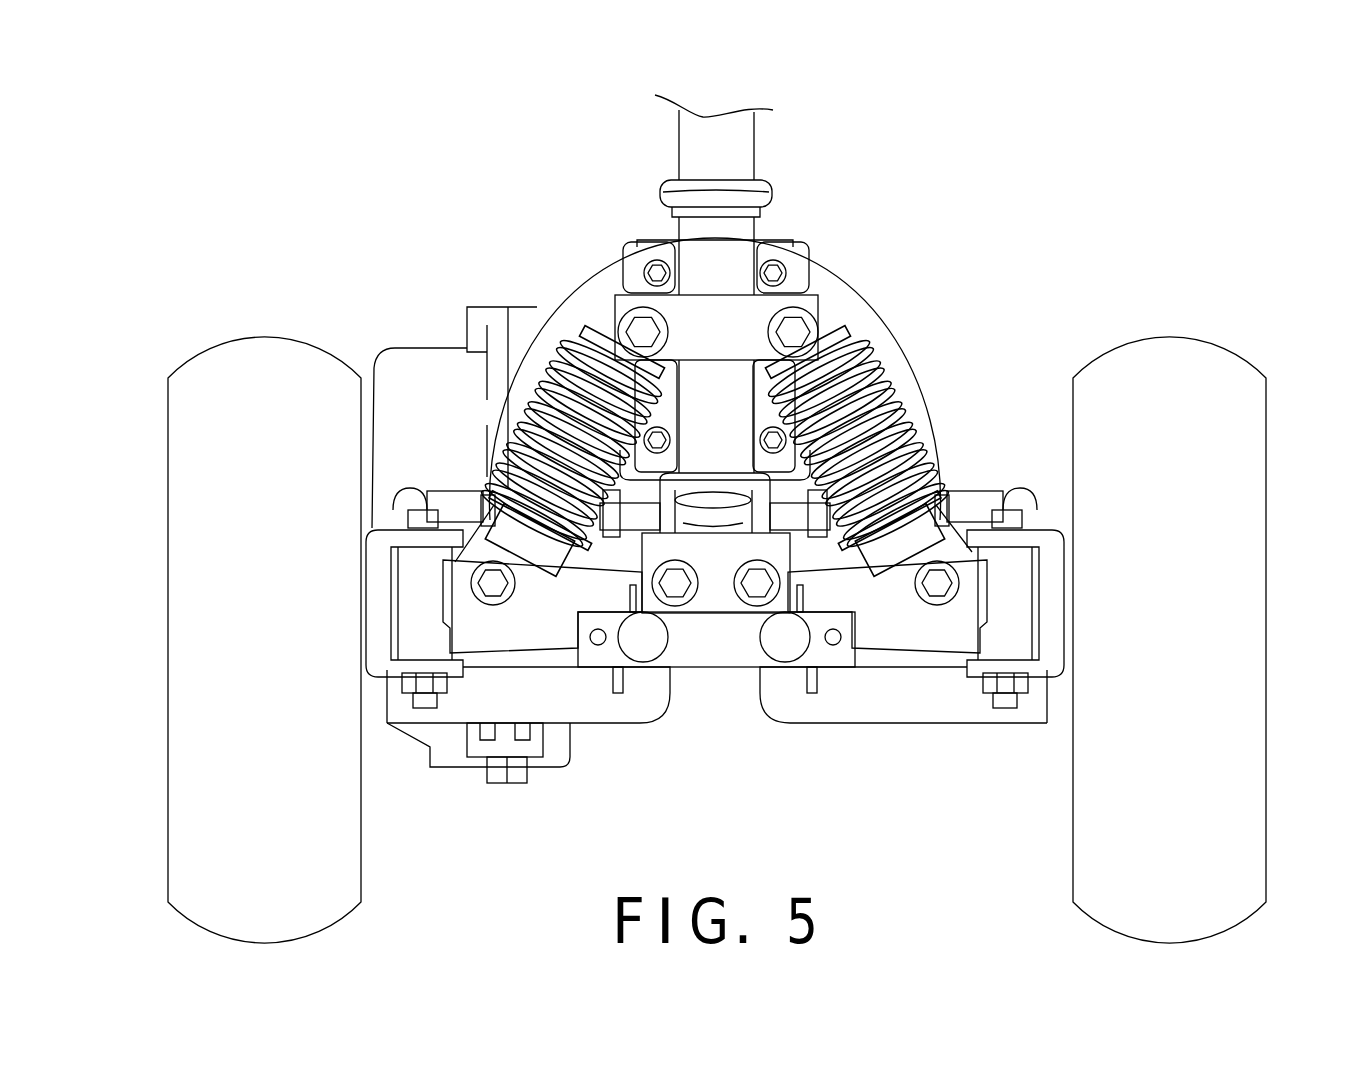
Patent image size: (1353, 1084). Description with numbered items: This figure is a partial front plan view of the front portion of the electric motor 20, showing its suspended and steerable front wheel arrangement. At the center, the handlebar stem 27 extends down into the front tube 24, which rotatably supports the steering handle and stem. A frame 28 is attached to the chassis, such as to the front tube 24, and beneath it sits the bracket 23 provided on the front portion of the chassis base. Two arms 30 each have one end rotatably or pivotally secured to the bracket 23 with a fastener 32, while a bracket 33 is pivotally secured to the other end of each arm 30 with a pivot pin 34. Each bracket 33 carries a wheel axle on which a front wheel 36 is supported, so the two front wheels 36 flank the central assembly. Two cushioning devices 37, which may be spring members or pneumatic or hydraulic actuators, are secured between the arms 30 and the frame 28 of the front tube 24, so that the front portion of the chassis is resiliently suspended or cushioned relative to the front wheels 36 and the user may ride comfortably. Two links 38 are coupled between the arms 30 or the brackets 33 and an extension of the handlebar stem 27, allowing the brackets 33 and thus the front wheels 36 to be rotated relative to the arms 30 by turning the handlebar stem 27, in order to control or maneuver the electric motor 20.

The electric motor 20 is at (467, 175).
The bracket 23 is at (710, 592).
The front tube 24 is at (700, 227).
The handlebar stem 27 is at (715, 130).
The frame 28 is at (723, 318).
The arm 30 is at (508, 620).
The fastener 32 is at (676, 590).
The bracket 33 is at (366, 700).
The pivot pin 34 is at (430, 700).
The front wheel 36 is at (183, 848).
The cushioning device 37 is at (550, 383).
The link 38 is at (450, 503).